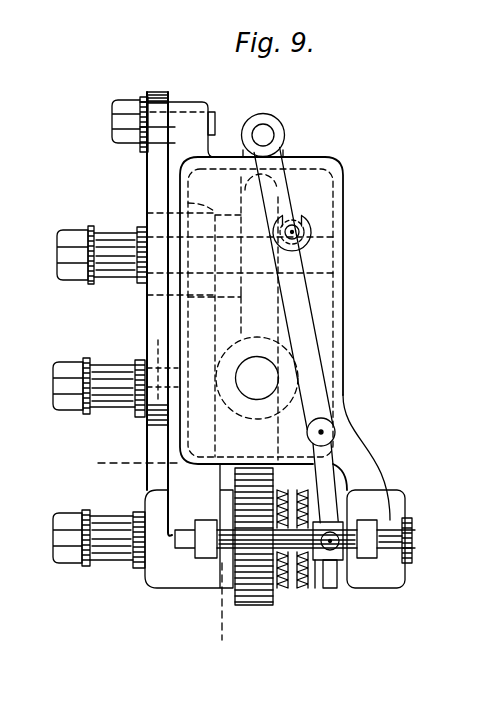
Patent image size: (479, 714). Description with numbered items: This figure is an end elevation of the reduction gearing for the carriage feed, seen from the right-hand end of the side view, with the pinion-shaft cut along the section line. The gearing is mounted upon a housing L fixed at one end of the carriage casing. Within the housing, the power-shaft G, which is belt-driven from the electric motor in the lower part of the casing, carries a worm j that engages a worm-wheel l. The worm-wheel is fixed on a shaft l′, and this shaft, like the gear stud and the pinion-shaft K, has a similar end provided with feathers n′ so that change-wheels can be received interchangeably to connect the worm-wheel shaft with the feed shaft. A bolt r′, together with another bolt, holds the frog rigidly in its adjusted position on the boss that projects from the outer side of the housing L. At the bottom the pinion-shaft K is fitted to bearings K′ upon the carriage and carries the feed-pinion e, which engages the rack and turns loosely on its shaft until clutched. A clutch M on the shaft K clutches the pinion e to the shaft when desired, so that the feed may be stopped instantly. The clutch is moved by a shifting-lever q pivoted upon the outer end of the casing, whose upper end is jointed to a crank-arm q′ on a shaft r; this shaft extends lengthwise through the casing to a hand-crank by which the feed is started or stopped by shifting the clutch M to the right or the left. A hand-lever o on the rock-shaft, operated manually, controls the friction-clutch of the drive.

The shaft r is at (264, 135).
The bolt r′ is at (215, 118).
The crank-arm q′ is at (283, 148).
The shifting-lever q is at (318, 333).
The housing L is at (343, 381).
The feathers n′ is at (112, 223).
The shaft l′ is at (120, 273).
The worm-wheel l is at (240, 313).
The hand-lever o is at (118, 402).
The worm j is at (228, 407).
The power-shaft G is at (257, 378).
The pinion-shaft K is at (115, 557).
The bearings K′ is at (195, 580).
The feed-pinion e is at (263, 603).
The clutch M is at (313, 580).